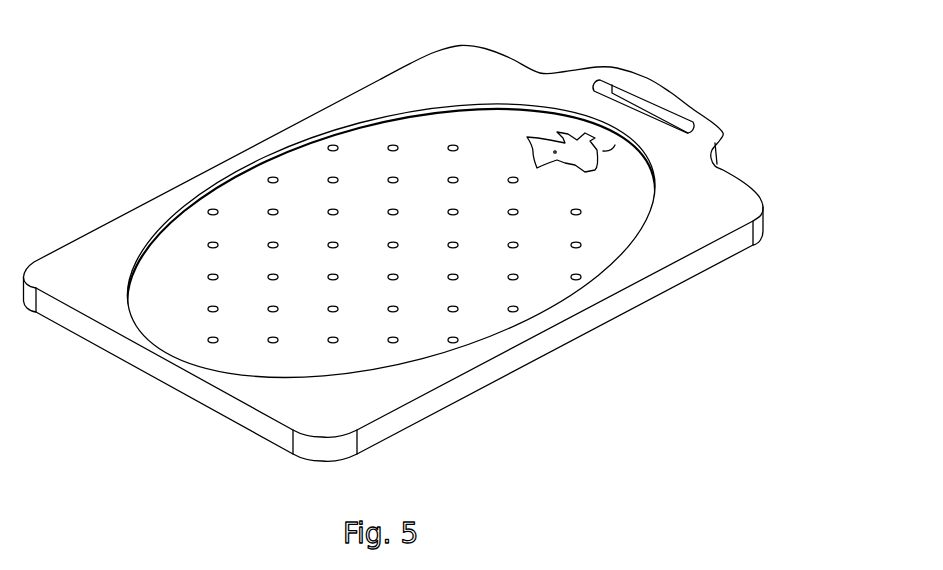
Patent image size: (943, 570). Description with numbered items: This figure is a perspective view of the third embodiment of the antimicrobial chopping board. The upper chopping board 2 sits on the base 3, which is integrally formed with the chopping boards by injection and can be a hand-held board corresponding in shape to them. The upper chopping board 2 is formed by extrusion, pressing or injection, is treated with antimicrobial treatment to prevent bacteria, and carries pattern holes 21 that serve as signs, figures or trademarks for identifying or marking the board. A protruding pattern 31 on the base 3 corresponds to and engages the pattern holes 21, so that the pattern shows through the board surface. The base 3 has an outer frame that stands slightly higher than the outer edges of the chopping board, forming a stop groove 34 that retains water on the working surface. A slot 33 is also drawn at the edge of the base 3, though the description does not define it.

The upper chopping board 2 is at (193, 337).
The base 3 is at (548, 335).
The pattern holes 21 is at (580, 153).
The protruding pattern 31 is at (670, 91).
The handle slot 33 is at (660, 117).
The stop groove 34 is at (267, 155).